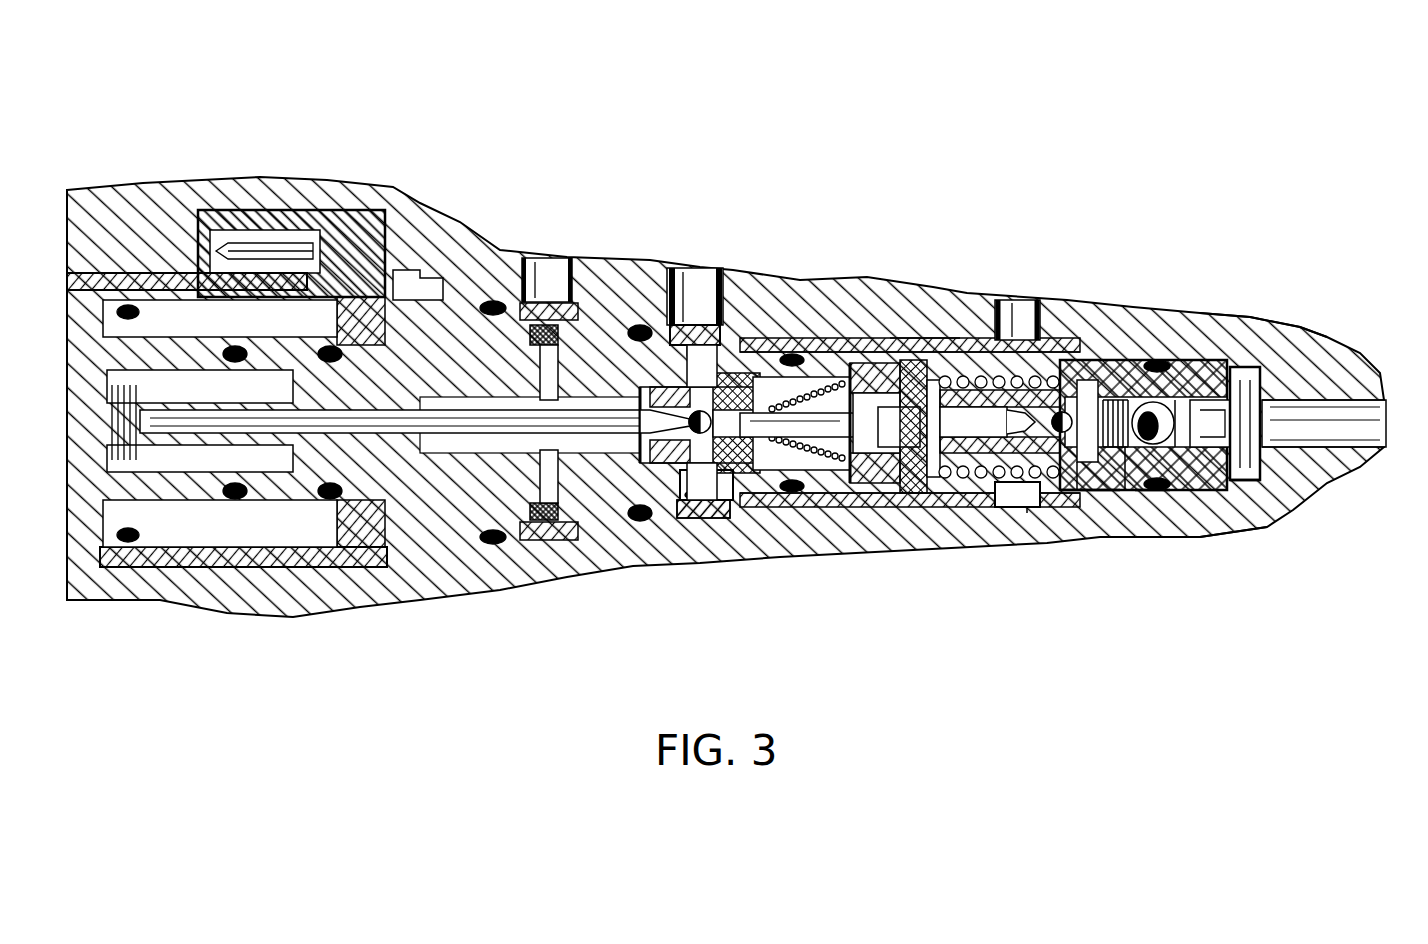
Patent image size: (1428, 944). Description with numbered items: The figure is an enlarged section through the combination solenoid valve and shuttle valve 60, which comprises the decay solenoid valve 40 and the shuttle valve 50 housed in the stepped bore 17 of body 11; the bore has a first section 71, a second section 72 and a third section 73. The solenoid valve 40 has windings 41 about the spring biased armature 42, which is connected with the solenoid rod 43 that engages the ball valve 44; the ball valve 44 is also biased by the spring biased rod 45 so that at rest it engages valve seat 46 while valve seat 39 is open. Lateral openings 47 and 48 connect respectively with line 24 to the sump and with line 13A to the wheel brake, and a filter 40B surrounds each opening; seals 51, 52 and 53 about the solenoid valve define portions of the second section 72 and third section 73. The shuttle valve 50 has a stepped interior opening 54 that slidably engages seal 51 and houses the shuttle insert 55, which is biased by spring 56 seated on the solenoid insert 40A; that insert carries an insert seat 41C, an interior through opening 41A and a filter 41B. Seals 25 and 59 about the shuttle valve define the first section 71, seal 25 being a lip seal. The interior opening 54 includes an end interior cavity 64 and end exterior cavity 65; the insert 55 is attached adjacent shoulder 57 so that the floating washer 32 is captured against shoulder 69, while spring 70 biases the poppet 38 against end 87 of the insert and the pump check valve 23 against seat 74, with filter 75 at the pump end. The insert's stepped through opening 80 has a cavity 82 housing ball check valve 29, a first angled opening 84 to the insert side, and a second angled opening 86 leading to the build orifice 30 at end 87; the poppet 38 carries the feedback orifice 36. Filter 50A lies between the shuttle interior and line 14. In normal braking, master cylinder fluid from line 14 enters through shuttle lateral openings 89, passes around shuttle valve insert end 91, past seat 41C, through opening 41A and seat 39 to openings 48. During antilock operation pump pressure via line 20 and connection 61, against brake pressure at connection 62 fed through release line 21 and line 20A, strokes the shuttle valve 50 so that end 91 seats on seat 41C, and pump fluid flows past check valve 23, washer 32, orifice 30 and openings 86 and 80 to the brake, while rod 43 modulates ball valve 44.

The body 11 is at (1250, 325).
The line 13A is at (700, 268).
The line 14 is at (1015, 305).
The stepped bore 17 is at (743, 518).
The line 20 is at (1370, 422).
The line 20A is at (1110, 503).
The release line 21 is at (815, 335).
The pump check valve 23 is at (1168, 350).
The line 24 is at (540, 265).
The seal 25 is at (957, 312).
The ball check valve 29 is at (1073, 513).
The build orifice 30 is at (1160, 340).
The floating washer 32 is at (1133, 513).
The feedback orifice 36 is at (1077, 513).
The poppet 38 is at (1157, 503).
The valve seat 39 is at (745, 475).
The decay solenoid valve 40 is at (372, 213).
The solenoid insert 40A is at (890, 335).
The filter 40B is at (548, 542).
The windings 41 is at (215, 332).
The interior through opening 41A is at (877, 517).
The filter 41B is at (913, 513).
The insert seat 41C is at (897, 340).
The armature 42 is at (257, 390).
The solenoid rod 43 is at (430, 410).
The ball valve 44 is at (677, 510).
The spring biased rod 45 is at (863, 510).
The valve seat 46 is at (655, 385).
The lateral opening 47 is at (583, 313).
The lateral opening 48 is at (730, 322).
The shuttle valve 50 is at (860, 365).
The filter 50A is at (1020, 513).
The seal 51 is at (830, 512).
The seal 52 is at (637, 522).
The seal 53 is at (497, 545).
The stepped interior opening 54 is at (940, 302).
The shuttle insert 55 is at (953, 513).
The spring 56 is at (987, 513).
The shoulder 57 is at (1143, 358).
The seal 59 is at (1210, 513).
The combination solenoid valve and shuttle valve 60 is at (588, 127).
The pressure connection 61 is at (1283, 340).
The pressure connection 62 is at (783, 325).
The end interior cavity 64 is at (1185, 350).
The end exterior cavity 65 is at (1215, 345).
The shoulder 69 is at (1140, 513).
The spring 70 is at (1193, 522).
The first section 71 is at (1085, 365).
The second section 72 is at (753, 330).
The third section 73 is at (605, 328).
The seat 74 is at (1260, 530).
The filter 75 is at (1310, 340).
The stepped through opening 80 is at (990, 434).
The cavity 82 is at (1100, 360).
The first angled opening 84 is at (1027, 513).
The second angled opening 86 is at (1067, 360).
The end 87 is at (1080, 513).
The shuttle lateral openings 89 is at (1047, 358).
The shuttle valve insert end 91 is at (1003, 298).